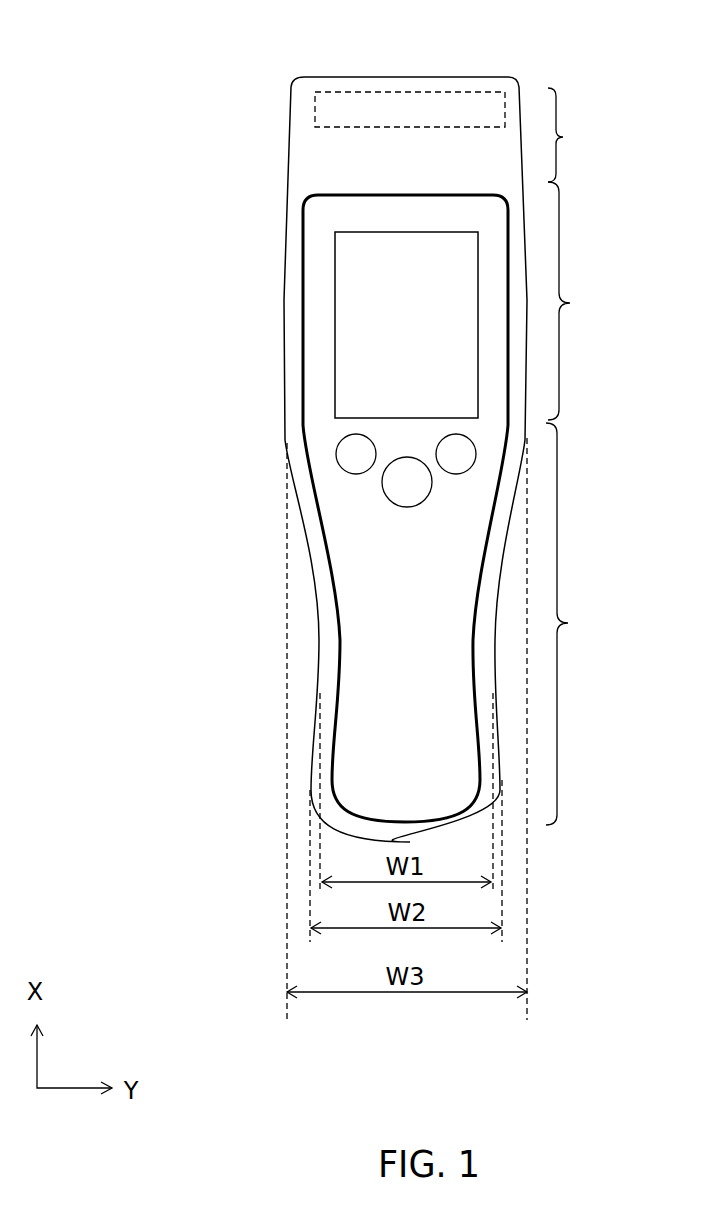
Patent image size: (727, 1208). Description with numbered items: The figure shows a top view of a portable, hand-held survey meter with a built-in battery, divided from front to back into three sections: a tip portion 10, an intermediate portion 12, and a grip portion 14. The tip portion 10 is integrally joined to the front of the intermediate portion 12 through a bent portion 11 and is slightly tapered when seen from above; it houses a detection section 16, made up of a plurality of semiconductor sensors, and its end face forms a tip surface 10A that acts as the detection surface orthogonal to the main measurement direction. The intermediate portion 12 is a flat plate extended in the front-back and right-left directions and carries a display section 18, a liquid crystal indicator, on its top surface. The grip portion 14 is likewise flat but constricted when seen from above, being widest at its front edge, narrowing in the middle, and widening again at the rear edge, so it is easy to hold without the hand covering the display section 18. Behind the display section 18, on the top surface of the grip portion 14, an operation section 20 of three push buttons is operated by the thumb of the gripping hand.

The tip surface 10A is at (420, 77).
The tip portion 10 is at (581, 135).
The bent portion 11 is at (410, 167).
The intermediate portion 12 is at (581, 301).
The grip portion 14 is at (580, 624).
The detection section 16 is at (315, 116).
The display section 18 is at (367, 300).
The operation section 20 is at (332, 442).